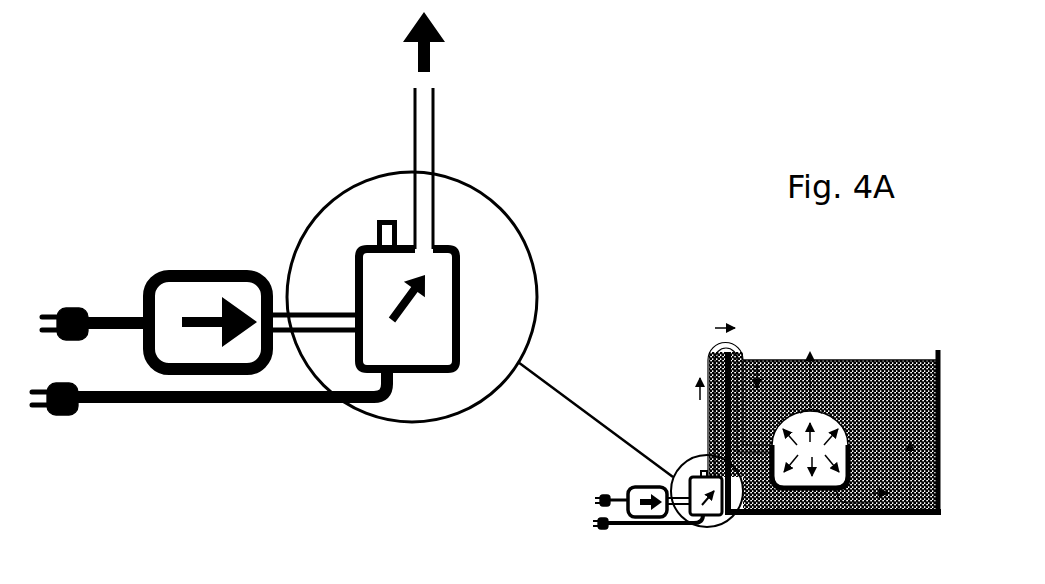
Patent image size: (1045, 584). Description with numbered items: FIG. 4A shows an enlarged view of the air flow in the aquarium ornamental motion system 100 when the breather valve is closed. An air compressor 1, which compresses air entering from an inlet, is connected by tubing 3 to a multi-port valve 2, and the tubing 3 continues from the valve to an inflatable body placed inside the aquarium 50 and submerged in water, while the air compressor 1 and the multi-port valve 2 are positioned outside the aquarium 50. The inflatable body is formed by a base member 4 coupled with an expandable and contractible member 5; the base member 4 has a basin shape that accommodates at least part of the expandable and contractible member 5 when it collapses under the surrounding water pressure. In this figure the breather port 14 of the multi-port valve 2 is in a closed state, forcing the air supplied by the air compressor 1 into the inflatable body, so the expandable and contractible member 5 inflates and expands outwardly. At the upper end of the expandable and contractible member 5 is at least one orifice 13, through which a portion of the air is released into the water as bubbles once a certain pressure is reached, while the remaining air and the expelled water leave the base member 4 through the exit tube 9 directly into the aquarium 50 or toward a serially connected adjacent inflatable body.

The aquarium ornamental motion system 100 is at (690, 282).
The air compressor 1 is at (207, 375).
The multi-port valve 2 is at (409, 373).
The breather port 14 is at (375, 230).
The tubing 3 is at (707, 357).
The aquarium 50 is at (937, 355).
The base member 4 is at (783, 483).
The expandable and contractible member 5 is at (785, 410).
The orifice 13 is at (817, 409).
The exit tube 9 is at (893, 513).